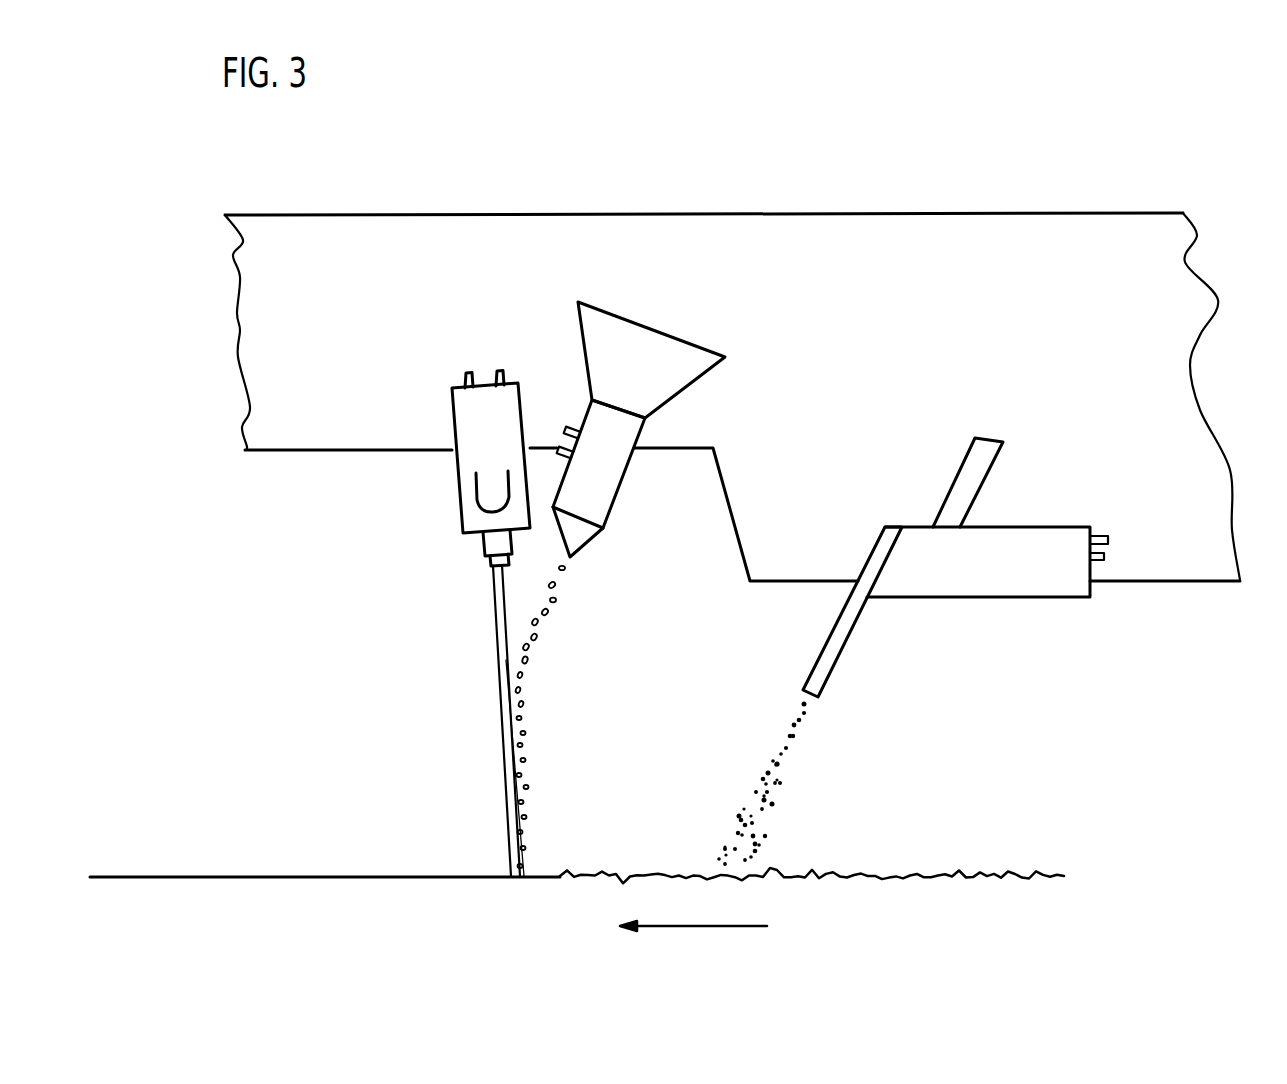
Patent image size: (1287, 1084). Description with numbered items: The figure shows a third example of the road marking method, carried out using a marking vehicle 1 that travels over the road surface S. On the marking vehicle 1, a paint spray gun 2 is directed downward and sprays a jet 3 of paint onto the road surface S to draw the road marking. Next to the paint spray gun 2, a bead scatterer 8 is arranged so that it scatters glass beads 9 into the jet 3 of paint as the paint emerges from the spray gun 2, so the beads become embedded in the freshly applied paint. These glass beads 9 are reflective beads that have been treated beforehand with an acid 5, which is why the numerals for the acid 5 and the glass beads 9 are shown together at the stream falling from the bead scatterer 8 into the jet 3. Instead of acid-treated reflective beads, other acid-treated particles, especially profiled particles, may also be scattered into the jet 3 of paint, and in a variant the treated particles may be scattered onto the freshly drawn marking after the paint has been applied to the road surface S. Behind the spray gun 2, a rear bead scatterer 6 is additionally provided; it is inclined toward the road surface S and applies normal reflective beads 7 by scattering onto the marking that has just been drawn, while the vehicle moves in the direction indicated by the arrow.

The marking vehicle 1 is at (1163, 280).
The paint spray gun 2 is at (473, 453).
The jet of paint 3 is at (497, 628).
The acid 5 is at (547, 612).
The rear bead scatterer 6 is at (973, 583).
The normal reflective beads 7 is at (752, 812).
The bead scatterer 8 is at (607, 485).
The glass beads 9 is at (573, 717).
The road surface S is at (327, 877).